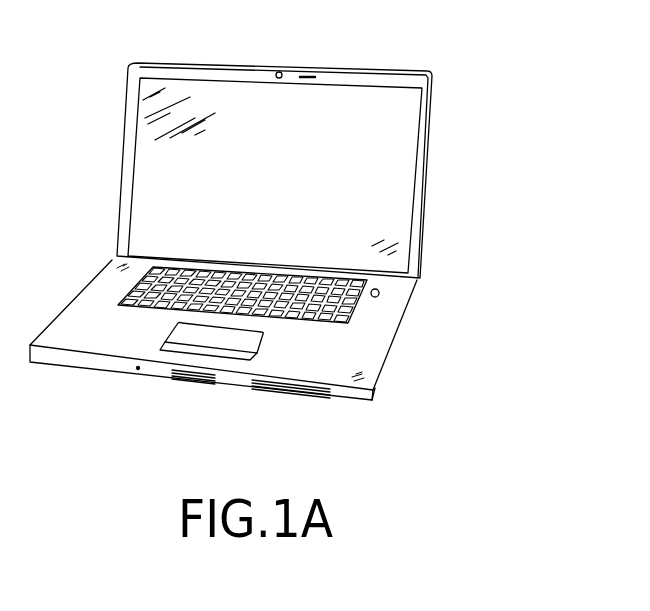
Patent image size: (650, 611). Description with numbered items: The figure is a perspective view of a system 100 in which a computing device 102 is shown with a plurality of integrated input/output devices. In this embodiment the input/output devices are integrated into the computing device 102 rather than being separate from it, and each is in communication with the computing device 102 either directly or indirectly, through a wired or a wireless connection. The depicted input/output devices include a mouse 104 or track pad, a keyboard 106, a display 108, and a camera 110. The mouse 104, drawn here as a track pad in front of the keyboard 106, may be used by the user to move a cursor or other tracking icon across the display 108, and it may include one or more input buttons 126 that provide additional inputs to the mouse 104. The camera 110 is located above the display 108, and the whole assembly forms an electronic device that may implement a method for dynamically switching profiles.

The system 100 is at (473, 272).
The computing device 102 is at (427, 172).
The mouse 104 is at (261, 334).
The keyboard 106 is at (357, 317).
The display 108 is at (407, 120).
The camera 110 is at (281, 71).
The input buttons 126 is at (217, 353).